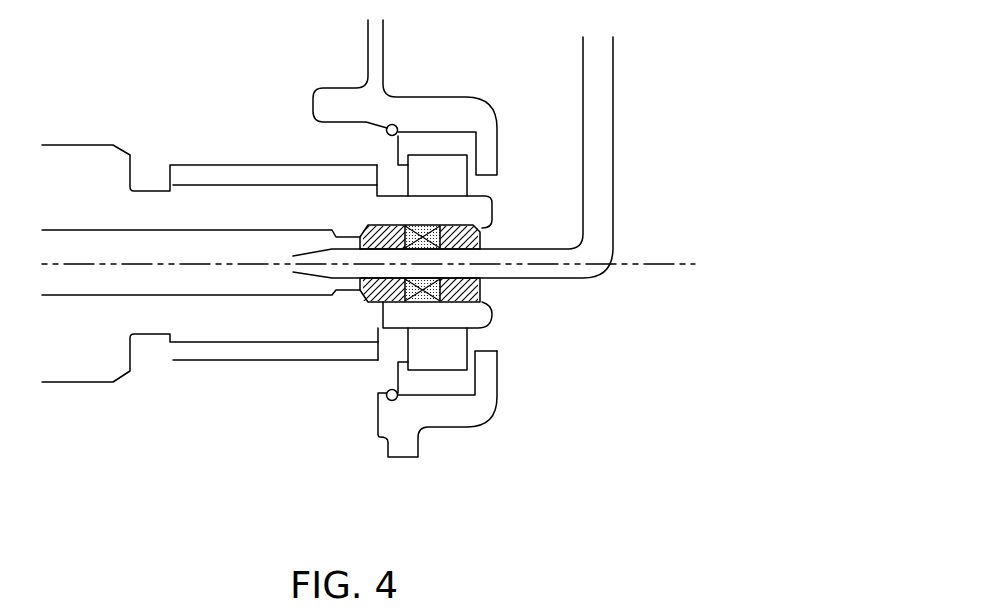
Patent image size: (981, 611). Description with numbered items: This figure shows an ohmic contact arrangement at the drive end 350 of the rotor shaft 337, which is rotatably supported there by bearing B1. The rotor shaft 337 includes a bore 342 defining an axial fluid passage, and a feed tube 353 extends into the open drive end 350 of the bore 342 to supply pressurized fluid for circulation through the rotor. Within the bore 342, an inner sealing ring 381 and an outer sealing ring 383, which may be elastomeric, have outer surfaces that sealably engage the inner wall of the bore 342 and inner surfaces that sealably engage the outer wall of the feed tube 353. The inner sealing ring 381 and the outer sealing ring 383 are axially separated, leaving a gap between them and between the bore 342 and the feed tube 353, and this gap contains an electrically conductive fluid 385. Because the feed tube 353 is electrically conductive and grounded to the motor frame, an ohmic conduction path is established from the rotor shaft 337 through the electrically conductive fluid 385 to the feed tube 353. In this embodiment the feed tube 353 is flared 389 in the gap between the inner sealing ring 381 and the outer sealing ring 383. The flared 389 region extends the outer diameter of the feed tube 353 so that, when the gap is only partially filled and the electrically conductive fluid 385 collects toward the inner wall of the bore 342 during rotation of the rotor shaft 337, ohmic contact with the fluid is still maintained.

The rotor shaft 337 is at (53, 167).
The bore 342 is at (189, 257).
The feed tube 353 is at (582, 88).
The outer sealing ring 383 is at (481, 240).
The flared portion of the feed tube 389 is at (422, 224).
The inner sealing ring 381 is at (383, 303).
The electrically conductive fluid 385 is at (433, 302).
The bearing B1 is at (448, 347).
The drive end 350 is at (193, 428).